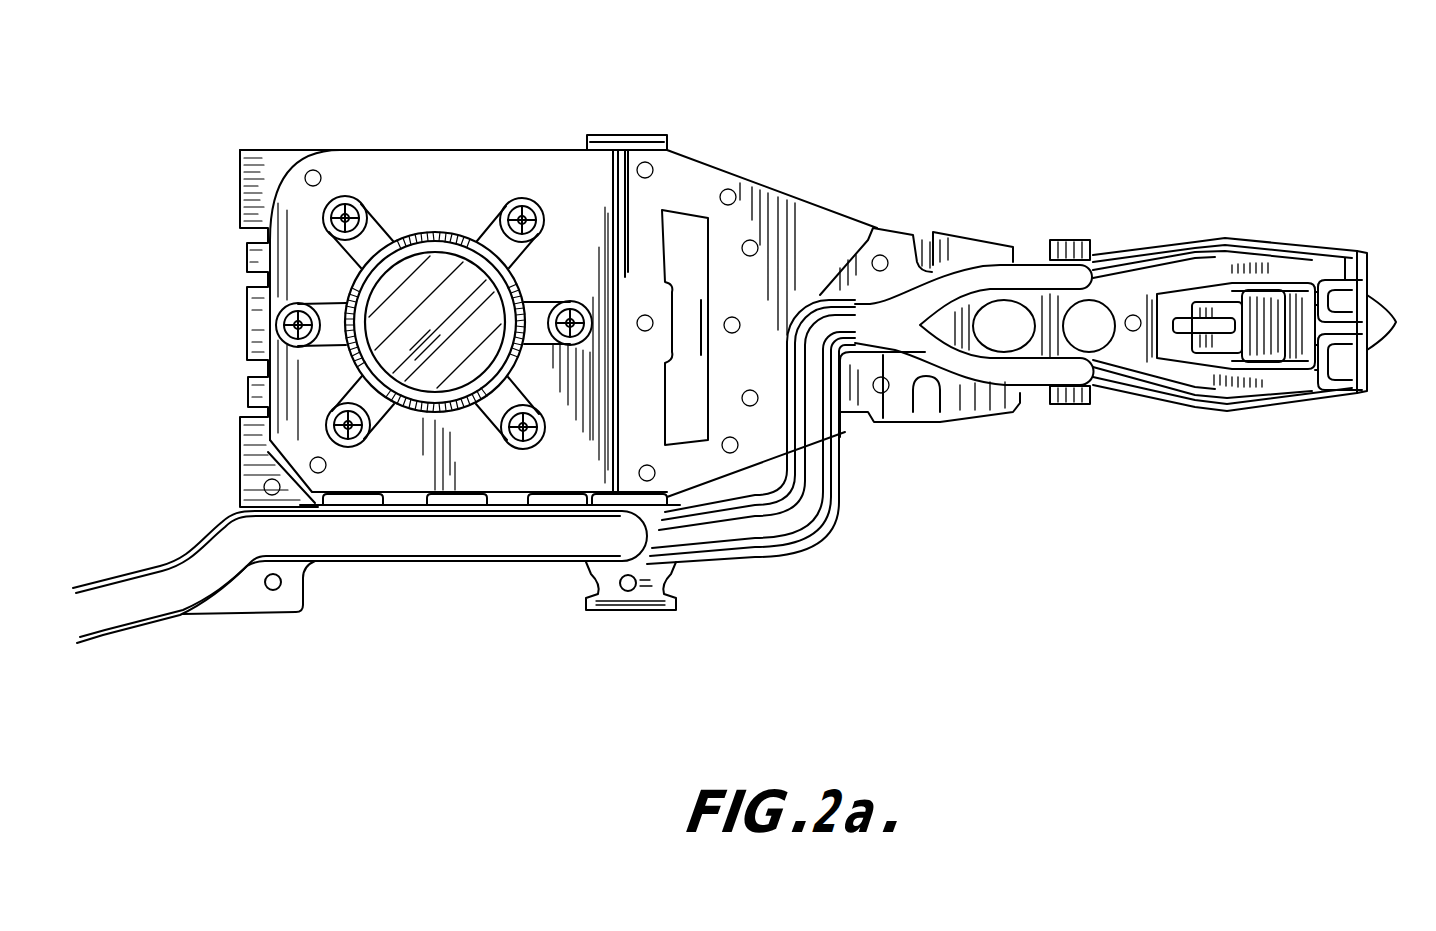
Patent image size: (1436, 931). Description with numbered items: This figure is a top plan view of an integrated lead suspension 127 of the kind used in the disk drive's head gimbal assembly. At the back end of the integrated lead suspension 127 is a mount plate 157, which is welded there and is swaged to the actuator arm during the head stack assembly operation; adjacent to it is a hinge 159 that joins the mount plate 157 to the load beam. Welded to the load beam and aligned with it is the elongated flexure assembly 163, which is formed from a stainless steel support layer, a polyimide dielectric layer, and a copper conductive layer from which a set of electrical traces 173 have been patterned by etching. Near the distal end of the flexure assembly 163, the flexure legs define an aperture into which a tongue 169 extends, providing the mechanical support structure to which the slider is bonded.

The integrated lead suspension 127 is at (482, 622).
The mount plate 157 is at (463, 232).
The hinge 159 is at (747, 285).
The flexure assembly 163 is at (1127, 400).
The tongue 169 is at (1253, 305).
The electrical traces 173 is at (1220, 243).